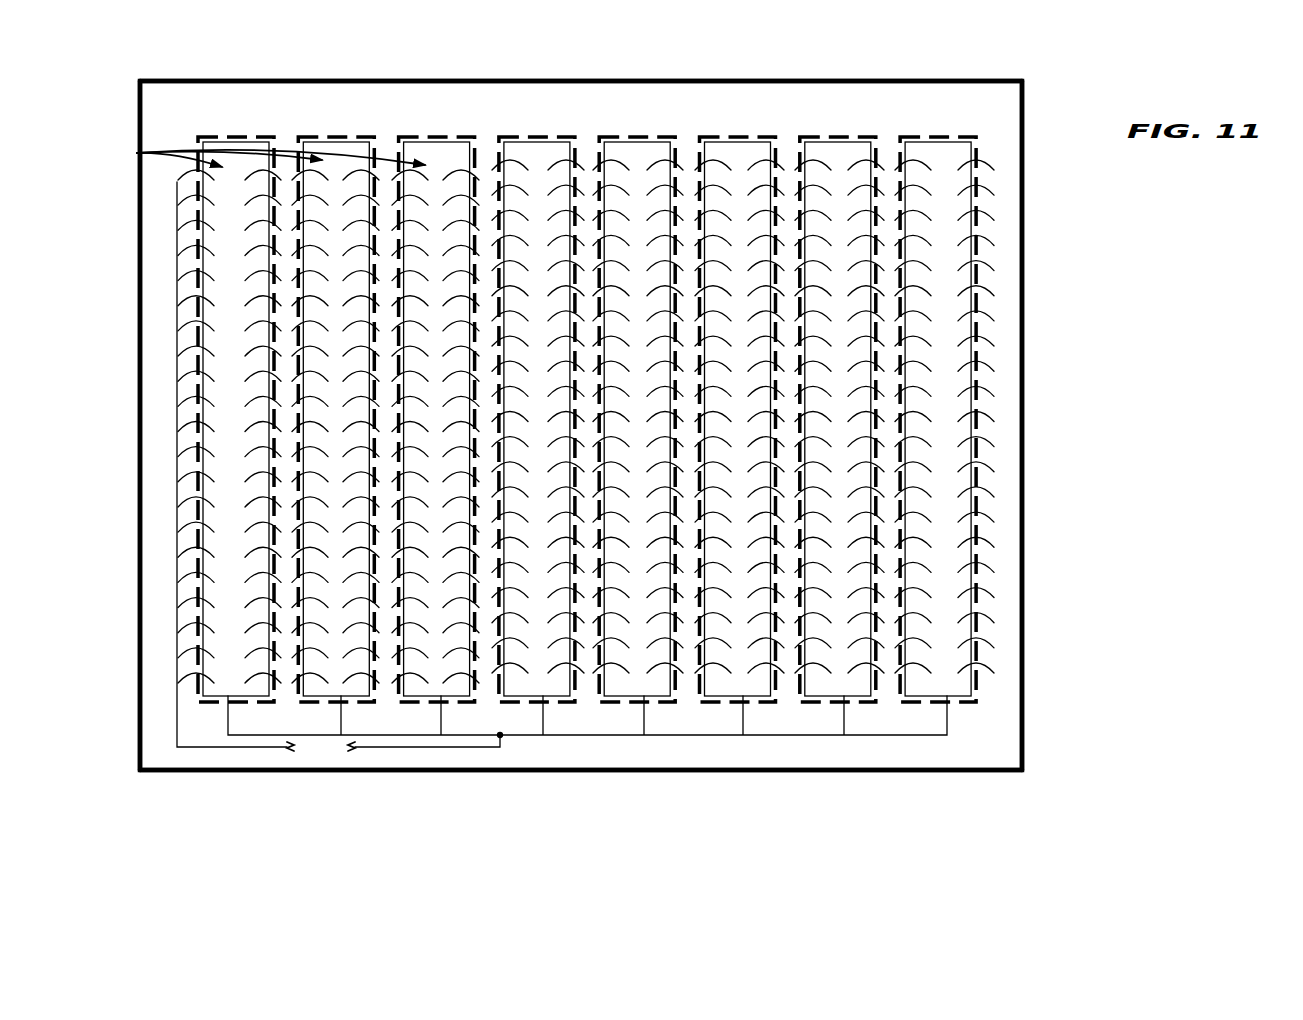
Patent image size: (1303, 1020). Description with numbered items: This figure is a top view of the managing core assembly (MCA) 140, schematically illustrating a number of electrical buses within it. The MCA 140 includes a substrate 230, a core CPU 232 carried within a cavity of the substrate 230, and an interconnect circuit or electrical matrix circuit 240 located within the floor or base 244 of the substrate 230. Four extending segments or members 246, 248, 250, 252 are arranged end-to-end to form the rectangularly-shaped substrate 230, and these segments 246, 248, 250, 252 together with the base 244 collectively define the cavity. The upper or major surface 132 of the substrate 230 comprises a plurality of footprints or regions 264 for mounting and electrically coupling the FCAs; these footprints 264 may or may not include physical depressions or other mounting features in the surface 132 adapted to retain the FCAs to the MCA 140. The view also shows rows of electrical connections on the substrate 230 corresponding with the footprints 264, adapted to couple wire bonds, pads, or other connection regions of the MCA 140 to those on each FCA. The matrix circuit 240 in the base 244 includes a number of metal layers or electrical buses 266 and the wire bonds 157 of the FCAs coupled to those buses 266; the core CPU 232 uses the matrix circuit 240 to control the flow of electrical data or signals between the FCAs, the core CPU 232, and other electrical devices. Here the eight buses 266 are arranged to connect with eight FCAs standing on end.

The upper or major surface 132 is at (665, 368).
The managing core assembly (MCA) 140 is at (1025, 277).
The wire bonds 157 is at (577, 155).
The substrate 230 is at (1022, 203).
The core CPU 232 is at (321, 750).
The electrical matrix circuit 240 is at (912, 108).
The base 244 is at (215, 120).
The extending segment 246 is at (1022, 588).
The extending segment 248 is at (537, 81).
The extending segment 250 is at (140, 565).
The extending segment 252 is at (838, 772).
The footprints 264 is at (557, 133).
The electrical buses 266 is at (137, 153).